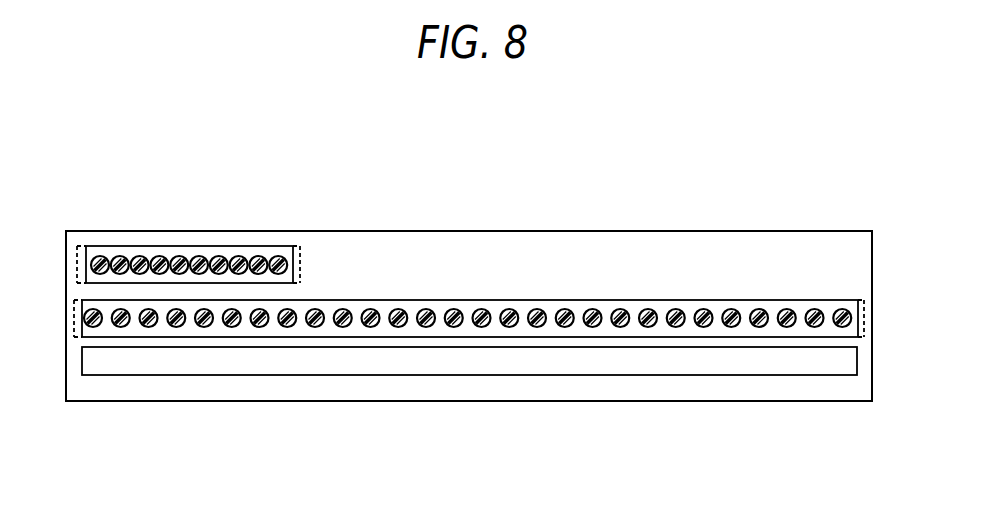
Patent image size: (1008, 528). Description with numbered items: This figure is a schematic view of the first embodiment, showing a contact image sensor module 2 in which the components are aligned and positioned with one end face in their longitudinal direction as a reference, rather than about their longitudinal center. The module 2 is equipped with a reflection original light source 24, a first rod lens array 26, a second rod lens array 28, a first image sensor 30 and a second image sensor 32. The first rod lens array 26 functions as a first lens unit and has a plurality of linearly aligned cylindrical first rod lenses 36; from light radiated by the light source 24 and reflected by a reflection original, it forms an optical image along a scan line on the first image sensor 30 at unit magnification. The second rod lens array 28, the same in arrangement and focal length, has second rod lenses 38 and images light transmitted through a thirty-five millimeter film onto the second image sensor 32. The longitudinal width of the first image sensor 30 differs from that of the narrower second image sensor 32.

The contact image sensor module 2 is at (672, 198).
The reflection original light source 24 is at (478, 376).
The first rod lens array 26 is at (538, 300).
The second rod lens array 28 is at (237, 246).
The first image sensor 30 is at (72, 312).
The second image sensor 32 is at (66, 231).
The first rod lenses 36 is at (96, 327).
The second rod lenses 38 is at (93, 257).